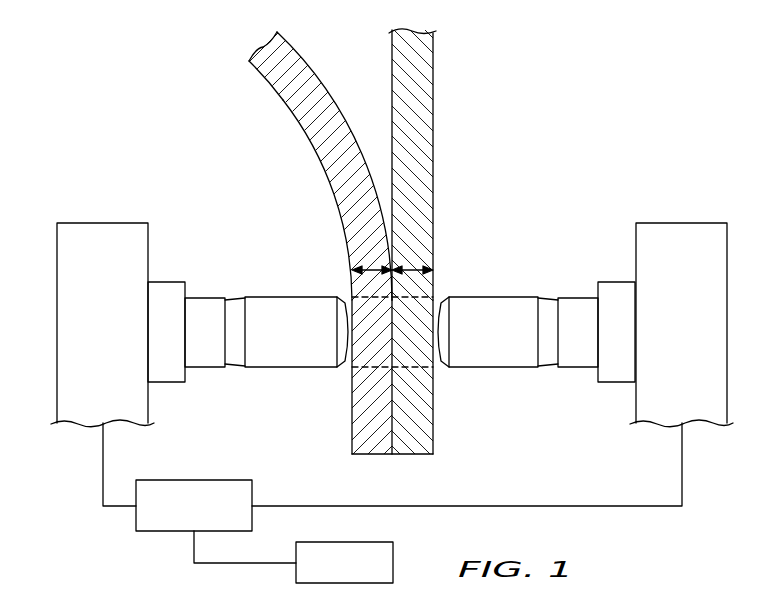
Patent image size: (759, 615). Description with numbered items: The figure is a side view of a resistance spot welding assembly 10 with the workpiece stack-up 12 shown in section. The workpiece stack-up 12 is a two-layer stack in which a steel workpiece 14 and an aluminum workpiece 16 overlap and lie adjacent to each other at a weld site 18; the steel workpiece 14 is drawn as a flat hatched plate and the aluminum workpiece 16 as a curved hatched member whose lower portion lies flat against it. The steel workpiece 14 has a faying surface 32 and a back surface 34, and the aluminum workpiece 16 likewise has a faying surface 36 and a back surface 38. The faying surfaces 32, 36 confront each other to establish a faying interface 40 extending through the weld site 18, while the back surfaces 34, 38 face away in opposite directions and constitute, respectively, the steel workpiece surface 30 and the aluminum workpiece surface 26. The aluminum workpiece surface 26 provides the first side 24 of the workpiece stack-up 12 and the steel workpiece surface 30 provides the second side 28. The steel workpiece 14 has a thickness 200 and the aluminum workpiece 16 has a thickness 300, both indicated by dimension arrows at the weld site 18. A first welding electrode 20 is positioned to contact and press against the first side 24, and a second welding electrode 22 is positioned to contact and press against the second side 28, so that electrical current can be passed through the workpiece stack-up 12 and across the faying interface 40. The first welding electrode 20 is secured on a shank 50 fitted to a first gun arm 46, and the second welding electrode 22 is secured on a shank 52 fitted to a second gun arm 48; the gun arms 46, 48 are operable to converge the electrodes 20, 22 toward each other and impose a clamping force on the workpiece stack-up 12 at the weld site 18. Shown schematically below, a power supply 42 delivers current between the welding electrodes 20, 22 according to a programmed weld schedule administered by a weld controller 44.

The resistance spot welding assembly 10 is at (117, 109).
The workpiece stack-up 12 is at (413, 455).
The steel workpiece 14 is at (420, 84).
The aluminum workpiece 16 is at (290, 89).
The weld site 18 is at (382, 367).
The first welding electrode 20 is at (298, 368).
The second welding electrode 22 is at (500, 368).
The first side 24 is at (352, 287).
The aluminum workpiece surface 26 is at (331, 183).
The second side 28 is at (433, 280).
The steel workpiece surface 30 is at (433, 163).
The faying surface of steel workpiece 32 is at (392, 62).
The back surface of steel workpiece 34 is at (433, 43).
The faying surface of aluminum workpiece 36 is at (302, 65).
The back surface of aluminum workpiece 38 is at (265, 78).
The faying interface 40 is at (393, 338).
The power supply 42 is at (392, 477).
The weld controller 44 is at (293, 557).
The first gun arm 46 is at (110, 240).
The second gun arm 48 is at (683, 243).
The shank 50 is at (203, 308).
The shank 52 is at (578, 312).
The thickness of steel workpiece 200 is at (413, 268).
The thickness of aluminum workpiece 300 is at (370, 268).